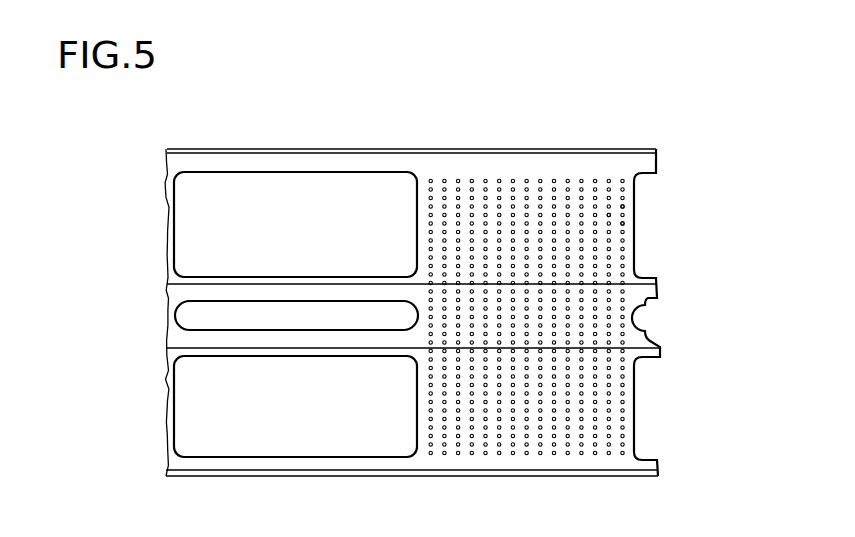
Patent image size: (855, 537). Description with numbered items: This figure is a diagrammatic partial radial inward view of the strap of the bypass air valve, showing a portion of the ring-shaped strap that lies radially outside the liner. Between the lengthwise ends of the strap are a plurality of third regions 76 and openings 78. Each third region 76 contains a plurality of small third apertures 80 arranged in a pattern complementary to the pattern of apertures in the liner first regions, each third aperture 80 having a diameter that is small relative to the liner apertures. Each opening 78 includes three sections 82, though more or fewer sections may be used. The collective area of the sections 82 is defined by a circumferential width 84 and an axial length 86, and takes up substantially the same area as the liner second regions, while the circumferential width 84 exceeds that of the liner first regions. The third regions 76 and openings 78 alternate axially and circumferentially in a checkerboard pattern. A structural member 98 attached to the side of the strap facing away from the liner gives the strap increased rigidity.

The third regions 76 is at (531, 168).
The openings 78 is at (292, 168).
The third apertures 80 is at (624, 224).
The sections 82 is at (175, 222).
The circumferential width 84 is at (416, 406).
The axial length 86 is at (170, 457).
The structural member 98 is at (640, 283).